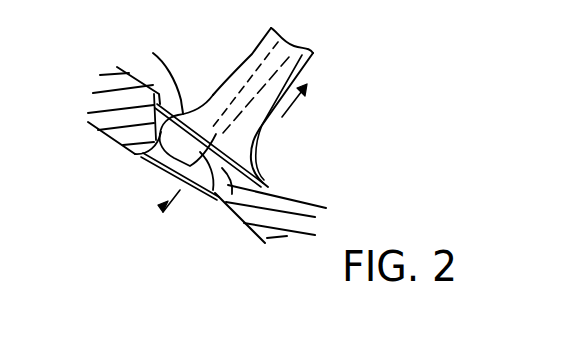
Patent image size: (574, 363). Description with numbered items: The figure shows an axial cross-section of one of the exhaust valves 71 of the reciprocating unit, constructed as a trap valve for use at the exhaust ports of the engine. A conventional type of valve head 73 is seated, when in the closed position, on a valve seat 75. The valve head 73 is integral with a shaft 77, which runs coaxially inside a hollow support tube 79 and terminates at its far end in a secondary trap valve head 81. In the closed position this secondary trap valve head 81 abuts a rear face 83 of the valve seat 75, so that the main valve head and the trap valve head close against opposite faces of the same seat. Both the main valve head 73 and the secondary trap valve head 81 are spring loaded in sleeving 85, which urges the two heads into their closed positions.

The exhaust valve 71 is at (236, 232).
The valve head 73 is at (207, 208).
The valve seat 75 is at (142, 157).
The shaft 77 is at (317, 68).
The hollow support tube 79 is at (259, 122).
The secondary trap valve head 81 is at (153, 73).
The rear face 83 is at (268, 186).
The sleeving 85 is at (245, 77).